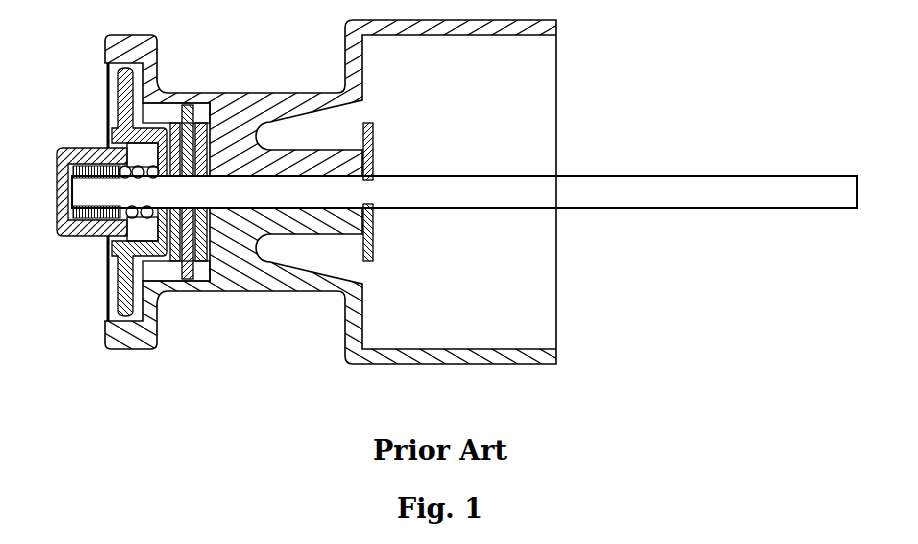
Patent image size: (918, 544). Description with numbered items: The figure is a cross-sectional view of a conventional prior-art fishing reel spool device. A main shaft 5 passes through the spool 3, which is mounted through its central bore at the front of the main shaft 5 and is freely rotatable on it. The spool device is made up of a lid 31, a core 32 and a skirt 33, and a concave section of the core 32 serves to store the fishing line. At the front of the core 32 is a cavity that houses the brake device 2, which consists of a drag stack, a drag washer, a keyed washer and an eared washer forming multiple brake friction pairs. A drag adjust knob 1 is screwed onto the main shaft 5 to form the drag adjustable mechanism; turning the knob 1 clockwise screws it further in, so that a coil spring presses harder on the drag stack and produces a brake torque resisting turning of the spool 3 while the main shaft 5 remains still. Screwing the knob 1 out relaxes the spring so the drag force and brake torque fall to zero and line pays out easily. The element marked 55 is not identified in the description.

The drag adjust knob 1 is at (95, 196).
The brake device 2 is at (117, 258).
The spool 3 is at (330, 218).
The main shaft 5 is at (650, 187).
The lid 31 is at (142, 348).
The core 32 is at (250, 292).
The skirt 33 is at (450, 357).
The seal 55 is at (82, 148).